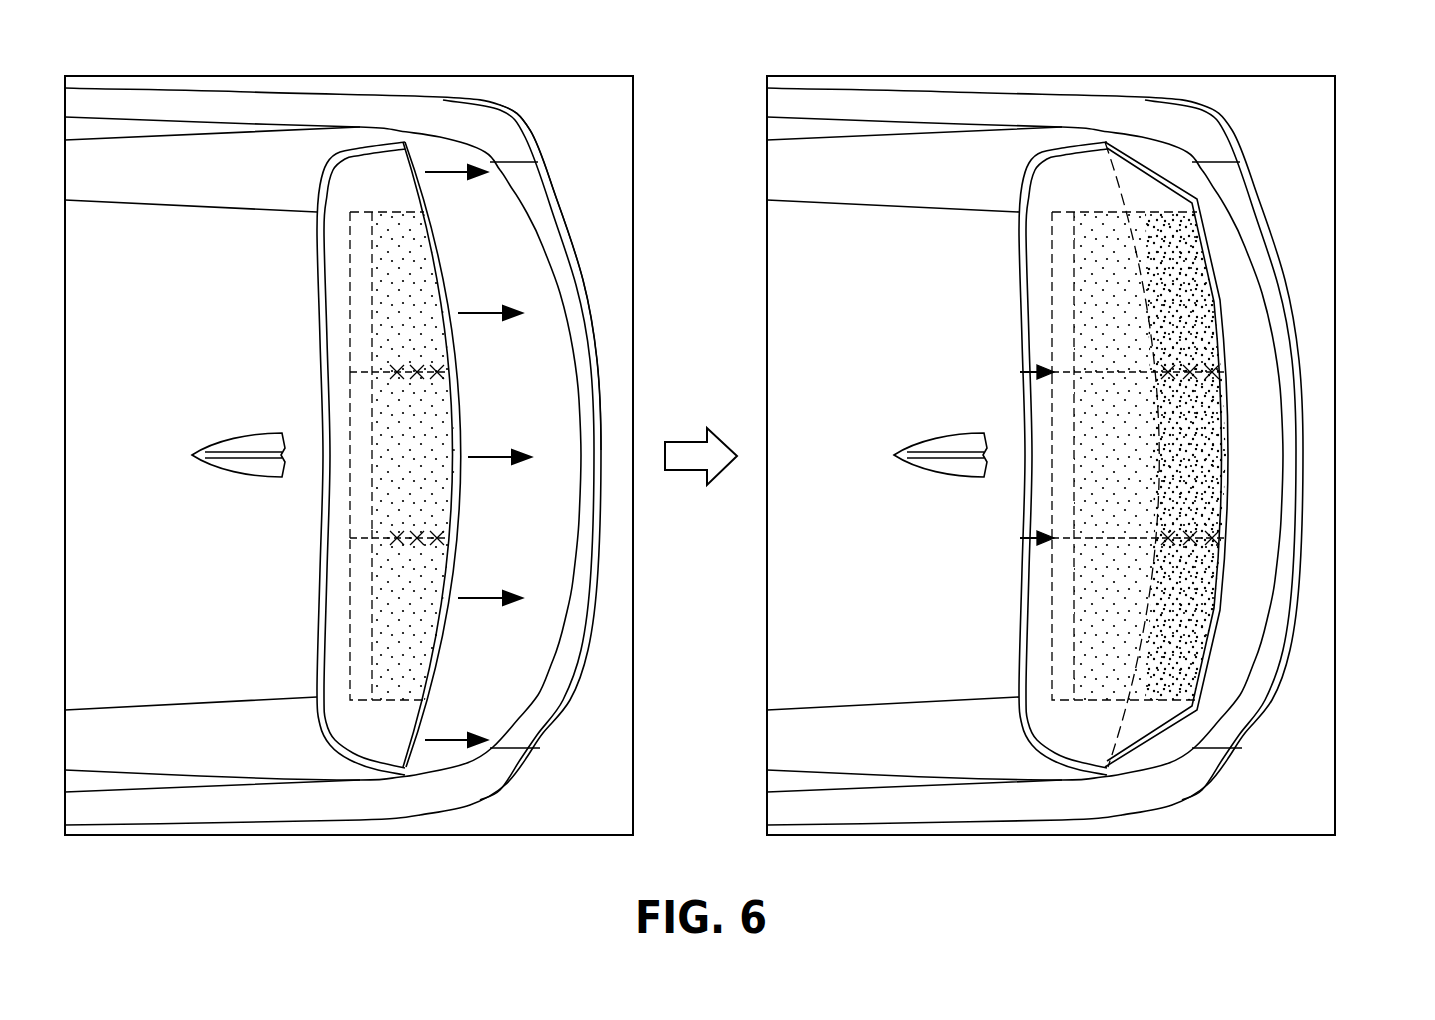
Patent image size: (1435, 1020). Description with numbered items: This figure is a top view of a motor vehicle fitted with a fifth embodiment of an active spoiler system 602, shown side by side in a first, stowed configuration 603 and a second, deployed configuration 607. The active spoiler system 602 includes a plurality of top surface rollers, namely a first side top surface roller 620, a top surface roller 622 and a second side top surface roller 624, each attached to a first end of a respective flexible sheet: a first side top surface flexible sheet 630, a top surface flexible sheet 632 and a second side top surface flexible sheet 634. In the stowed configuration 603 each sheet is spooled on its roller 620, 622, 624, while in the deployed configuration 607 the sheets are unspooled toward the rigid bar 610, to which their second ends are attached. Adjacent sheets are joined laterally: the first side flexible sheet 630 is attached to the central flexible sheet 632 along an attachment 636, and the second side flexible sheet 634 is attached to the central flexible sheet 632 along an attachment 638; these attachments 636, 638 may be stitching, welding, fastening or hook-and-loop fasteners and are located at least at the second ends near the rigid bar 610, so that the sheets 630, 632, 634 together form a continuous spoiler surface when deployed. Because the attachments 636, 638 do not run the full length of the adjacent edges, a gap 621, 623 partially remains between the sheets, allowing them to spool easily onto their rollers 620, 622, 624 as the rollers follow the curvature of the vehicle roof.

The active spoiler system 602 is at (415, 121).
The first, stowed configuration 603 is at (558, 115).
The second, deployed configuration 607 is at (1258, 114).
The rigid bar 610 is at (457, 475).
The first side top surface roller 620 is at (350, 620).
The gap 621 is at (1036, 541).
The top surface roller 622 is at (350, 495).
The gap 623 is at (1036, 370).
The second side top surface roller 624 is at (350, 305).
The first side top surface flexible sheet 630 is at (385, 595).
The top surface flexible sheet 632 is at (390, 420).
The second side top surface flexible sheet 634 is at (390, 325).
The attachment 636 is at (450, 552).
The attachment 638 is at (450, 360).